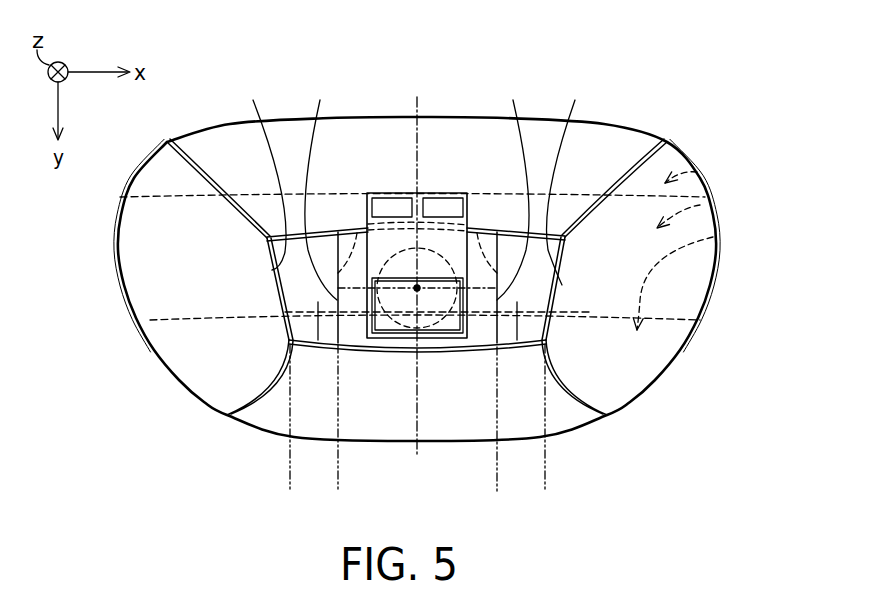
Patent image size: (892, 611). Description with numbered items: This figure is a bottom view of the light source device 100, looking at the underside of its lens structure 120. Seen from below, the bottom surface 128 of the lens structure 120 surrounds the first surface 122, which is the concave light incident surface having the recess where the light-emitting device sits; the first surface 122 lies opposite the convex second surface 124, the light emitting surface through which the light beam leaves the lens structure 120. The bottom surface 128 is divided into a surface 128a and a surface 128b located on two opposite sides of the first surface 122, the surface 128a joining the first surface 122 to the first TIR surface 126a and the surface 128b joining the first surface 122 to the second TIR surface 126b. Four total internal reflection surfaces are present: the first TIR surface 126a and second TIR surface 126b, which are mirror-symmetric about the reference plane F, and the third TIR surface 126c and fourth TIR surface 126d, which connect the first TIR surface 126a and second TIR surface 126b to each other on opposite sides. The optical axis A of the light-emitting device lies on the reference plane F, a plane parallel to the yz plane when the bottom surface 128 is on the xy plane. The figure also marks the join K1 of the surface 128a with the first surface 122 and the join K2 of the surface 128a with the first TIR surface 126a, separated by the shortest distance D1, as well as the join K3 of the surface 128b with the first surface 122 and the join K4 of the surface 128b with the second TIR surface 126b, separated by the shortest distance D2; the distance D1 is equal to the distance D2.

The light source device 100 is at (766, 429).
The lens structure 120 is at (663, 103).
The first surface 122 is at (485, 327).
The second surface 124 is at (700, 205).
The first TIR surface 126a is at (677, 270).
The second TIR surface 126b is at (158, 270).
The third TIR surface 126c is at (371, 400).
The fourth TIR surface 126d is at (467, 155).
The bottom surface 128 is at (417, 394).
The surface 128a is at (517, 302).
The surface 128b is at (318, 302).
The join K1 is at (513, 184).
The join K2 is at (569, 177).
The join K3 is at (321, 184).
The join K4 is at (264, 169).
The reference plane F is at (415, 112).
The optical axis A is at (417, 290).
The shortest distance D1 is at (545, 482).
The shortest distance D2 is at (338, 482).